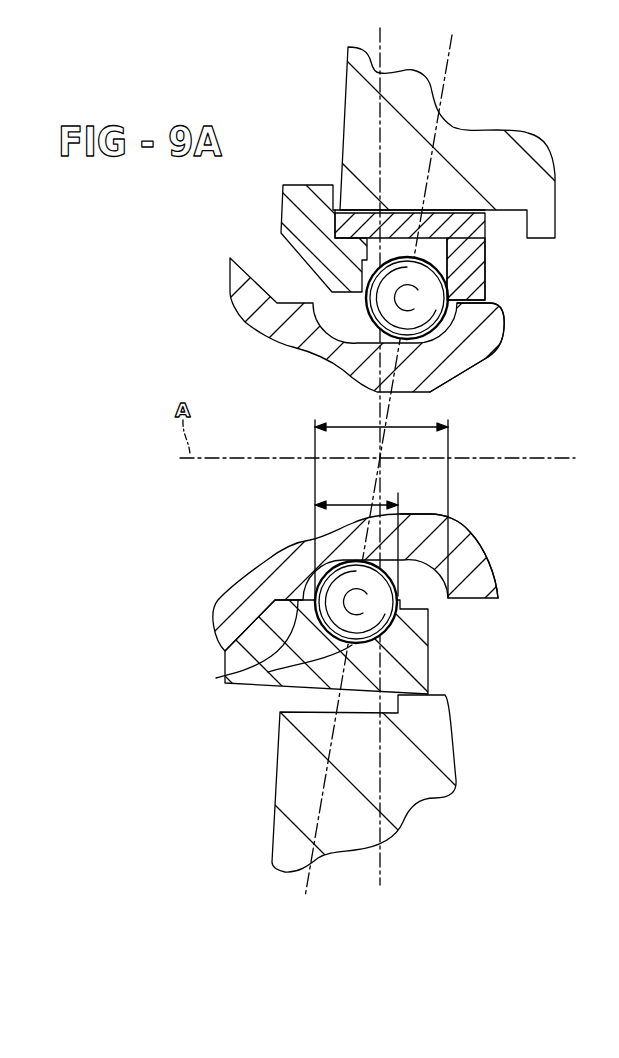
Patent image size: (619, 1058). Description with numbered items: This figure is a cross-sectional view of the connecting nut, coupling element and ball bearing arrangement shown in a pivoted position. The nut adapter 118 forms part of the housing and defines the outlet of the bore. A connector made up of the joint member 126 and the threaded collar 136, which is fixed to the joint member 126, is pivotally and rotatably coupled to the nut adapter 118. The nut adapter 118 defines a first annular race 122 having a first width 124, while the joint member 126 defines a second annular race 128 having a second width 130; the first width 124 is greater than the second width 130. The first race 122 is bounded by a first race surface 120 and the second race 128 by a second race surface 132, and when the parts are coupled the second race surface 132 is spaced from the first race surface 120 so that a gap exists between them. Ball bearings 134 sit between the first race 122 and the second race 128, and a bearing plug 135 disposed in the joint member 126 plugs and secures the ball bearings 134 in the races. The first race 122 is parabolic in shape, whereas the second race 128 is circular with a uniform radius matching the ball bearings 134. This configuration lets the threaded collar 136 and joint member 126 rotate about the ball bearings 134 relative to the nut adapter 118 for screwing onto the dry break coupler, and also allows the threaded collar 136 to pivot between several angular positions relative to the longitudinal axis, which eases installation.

The nut adapter 118 is at (292, 336).
The first race surface 120 is at (492, 301).
The first annular race 122 is at (500, 343).
The first width 124 is at (357, 425).
The joint member 126 is at (313, 200).
The second annular race 128 is at (268, 672).
The second width 130 is at (352, 504).
The second race surface 132 is at (216, 678).
The ball bearings 134 is at (423, 290).
The bearing plug 135 is at (487, 237).
The threaded collar 136 is at (467, 145).